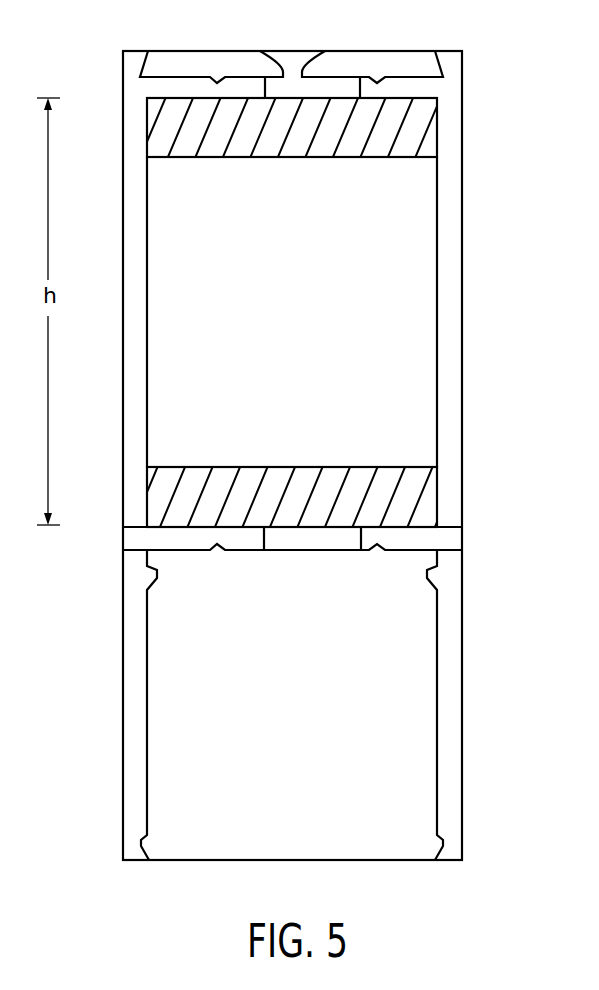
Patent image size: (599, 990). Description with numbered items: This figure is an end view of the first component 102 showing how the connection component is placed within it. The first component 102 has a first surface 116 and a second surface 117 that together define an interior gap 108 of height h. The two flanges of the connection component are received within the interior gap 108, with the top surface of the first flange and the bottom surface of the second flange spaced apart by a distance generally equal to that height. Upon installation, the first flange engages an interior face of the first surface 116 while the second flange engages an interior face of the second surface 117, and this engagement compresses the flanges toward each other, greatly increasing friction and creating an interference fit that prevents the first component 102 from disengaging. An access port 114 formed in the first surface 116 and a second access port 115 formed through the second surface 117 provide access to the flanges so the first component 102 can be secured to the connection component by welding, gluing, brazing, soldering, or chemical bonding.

The first component 102 is at (123, 80).
The first surface 116 is at (228, 85).
The access port 114 is at (328, 88).
The interior gap 108 is at (307, 313).
The second surface 117 is at (249, 542).
The second access port 115 is at (337, 542).